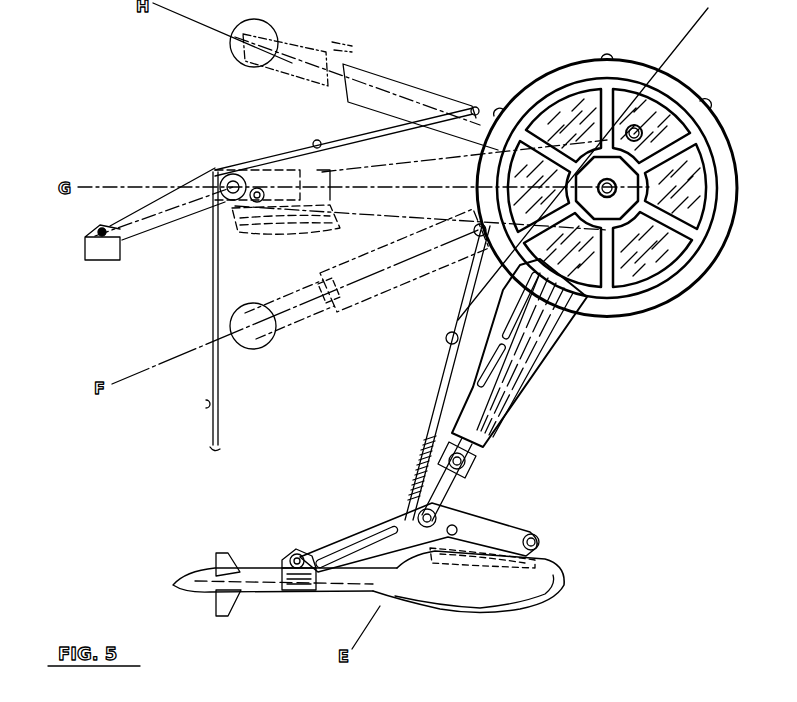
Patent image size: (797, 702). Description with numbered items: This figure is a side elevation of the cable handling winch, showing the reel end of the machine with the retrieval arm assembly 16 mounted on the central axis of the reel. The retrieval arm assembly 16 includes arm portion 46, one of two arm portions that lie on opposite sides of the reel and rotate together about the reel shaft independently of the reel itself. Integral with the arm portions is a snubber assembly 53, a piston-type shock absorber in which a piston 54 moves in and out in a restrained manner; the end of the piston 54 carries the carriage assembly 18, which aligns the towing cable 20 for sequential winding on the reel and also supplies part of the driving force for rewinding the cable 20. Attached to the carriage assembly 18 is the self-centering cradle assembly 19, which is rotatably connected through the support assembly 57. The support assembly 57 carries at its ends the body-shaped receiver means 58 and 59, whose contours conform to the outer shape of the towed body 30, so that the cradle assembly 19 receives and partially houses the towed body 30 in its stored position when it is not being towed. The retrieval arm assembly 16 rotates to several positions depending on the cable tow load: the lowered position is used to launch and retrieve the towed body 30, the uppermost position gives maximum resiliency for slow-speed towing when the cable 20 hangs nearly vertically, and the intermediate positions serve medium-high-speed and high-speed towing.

The retrieval arm assembly 16 is at (388, 68).
The arm portion 46 is at (431, 96).
The high speed towing cable 20 is at (447, 368).
The carriage assembly 18 is at (406, 474).
The snubber assembly 53 is at (527, 356).
The piston 54 is at (480, 459).
The support assembly 57 is at (352, 546).
The body-shaped receiver means 59 is at (538, 556).
The cradle assembly 19 is at (290, 545).
The body-shaped receiver means 58 is at (299, 574).
The towed body 30 is at (487, 588).